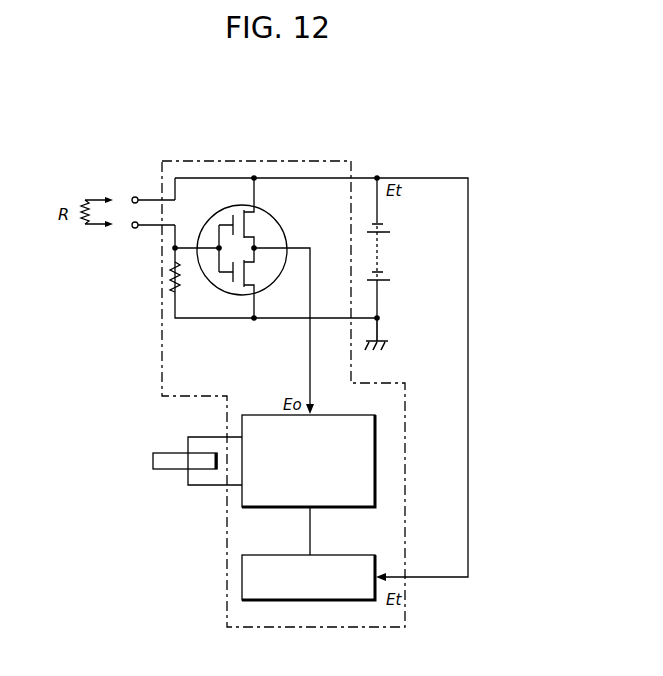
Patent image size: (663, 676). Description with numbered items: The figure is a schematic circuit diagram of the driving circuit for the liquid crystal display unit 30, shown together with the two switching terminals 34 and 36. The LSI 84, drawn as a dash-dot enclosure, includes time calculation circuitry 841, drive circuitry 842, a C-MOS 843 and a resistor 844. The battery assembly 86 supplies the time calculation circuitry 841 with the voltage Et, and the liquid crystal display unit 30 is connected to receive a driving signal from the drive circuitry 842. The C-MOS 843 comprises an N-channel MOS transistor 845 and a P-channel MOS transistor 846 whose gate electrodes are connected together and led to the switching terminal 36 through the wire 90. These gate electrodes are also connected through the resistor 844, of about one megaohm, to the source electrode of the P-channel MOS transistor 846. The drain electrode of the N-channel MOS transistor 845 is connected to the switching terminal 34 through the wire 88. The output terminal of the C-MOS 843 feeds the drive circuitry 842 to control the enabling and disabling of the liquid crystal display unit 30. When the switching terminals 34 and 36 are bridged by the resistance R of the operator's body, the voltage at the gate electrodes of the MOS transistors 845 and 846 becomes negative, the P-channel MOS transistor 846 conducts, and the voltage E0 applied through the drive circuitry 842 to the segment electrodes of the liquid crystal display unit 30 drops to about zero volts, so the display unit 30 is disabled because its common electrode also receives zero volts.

The liquid crystal display unit 30 is at (153, 464).
The switching terminal 34 is at (133, 197).
The switching terminal 36 is at (133, 228).
The LSI 84 is at (351, 152).
The battery assembly 86 is at (385, 252).
The wire 88 is at (152, 199).
The wire 90 is at (143, 228).
The time calculation circuitry 841 is at (377, 563).
The drive circuitry 842 is at (375, 451).
The C-MOS 843 is at (255, 212).
The resistor 844 is at (173, 286).
The N-channel MOS transistor 845 is at (257, 225).
The P-channel MOS transistor 846 is at (255, 272).